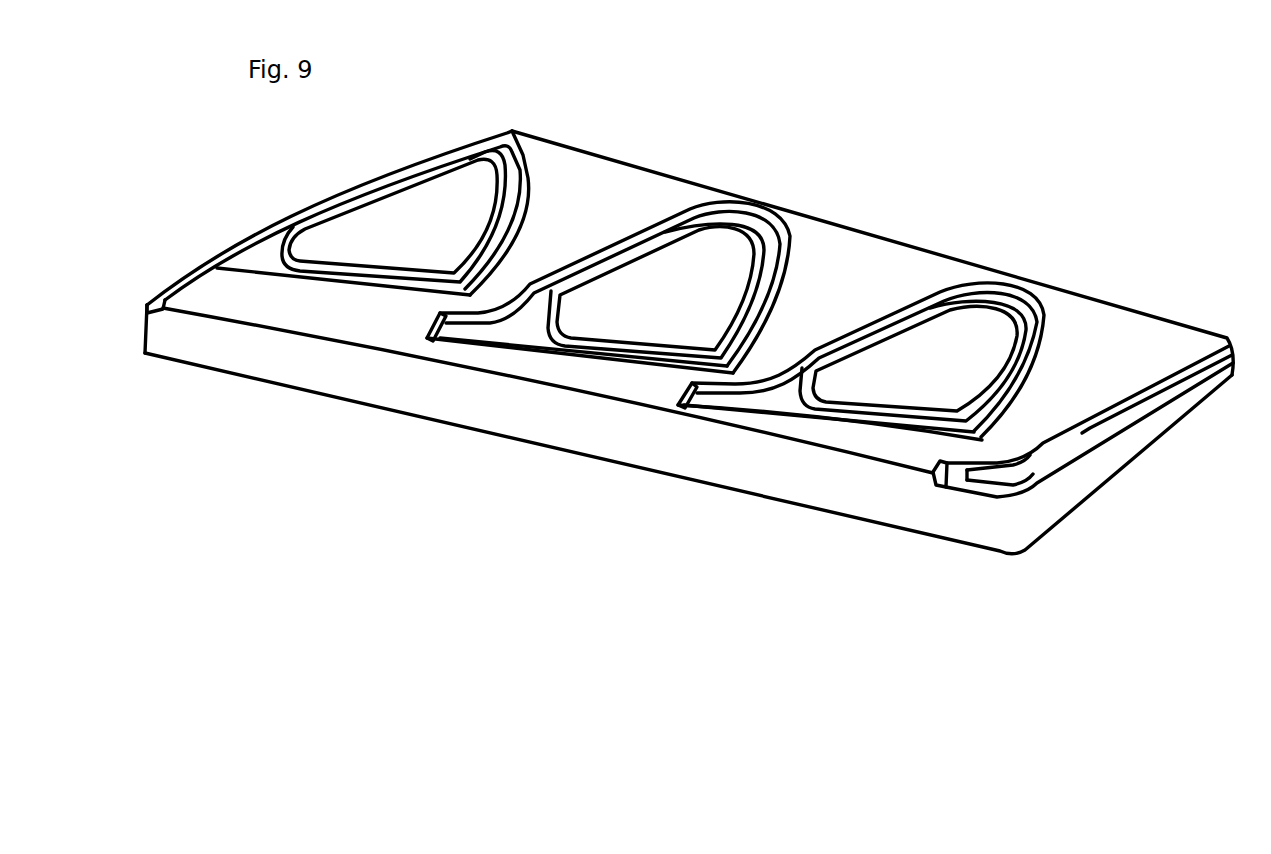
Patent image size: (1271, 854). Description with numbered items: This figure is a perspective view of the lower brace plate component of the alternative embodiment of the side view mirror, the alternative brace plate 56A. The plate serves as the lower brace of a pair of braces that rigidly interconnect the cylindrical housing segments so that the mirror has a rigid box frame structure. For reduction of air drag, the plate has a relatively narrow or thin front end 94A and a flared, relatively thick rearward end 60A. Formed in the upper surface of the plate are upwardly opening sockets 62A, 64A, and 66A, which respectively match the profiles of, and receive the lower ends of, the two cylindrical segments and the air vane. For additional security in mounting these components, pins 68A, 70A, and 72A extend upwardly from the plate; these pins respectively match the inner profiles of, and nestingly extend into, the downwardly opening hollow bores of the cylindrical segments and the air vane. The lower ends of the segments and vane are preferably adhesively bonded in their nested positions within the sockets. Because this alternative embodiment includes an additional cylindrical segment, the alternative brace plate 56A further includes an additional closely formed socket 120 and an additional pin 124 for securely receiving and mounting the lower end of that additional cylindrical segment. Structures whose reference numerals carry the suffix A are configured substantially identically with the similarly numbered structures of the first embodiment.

The alternative brace plate 56A is at (612, 190).
The rearward end 60A is at (603, 432).
The upwardly opening socket 62A is at (1015, 353).
The upwardly opening socket 64A is at (681, 222).
The upwardly opening socket 66A is at (1090, 438).
The pin 68A is at (973, 328).
The pin 70A is at (710, 272).
The pin 72A is at (1003, 453).
The front end 94A is at (897, 243).
The socket 120 is at (380, 275).
The pin 124 is at (448, 183).